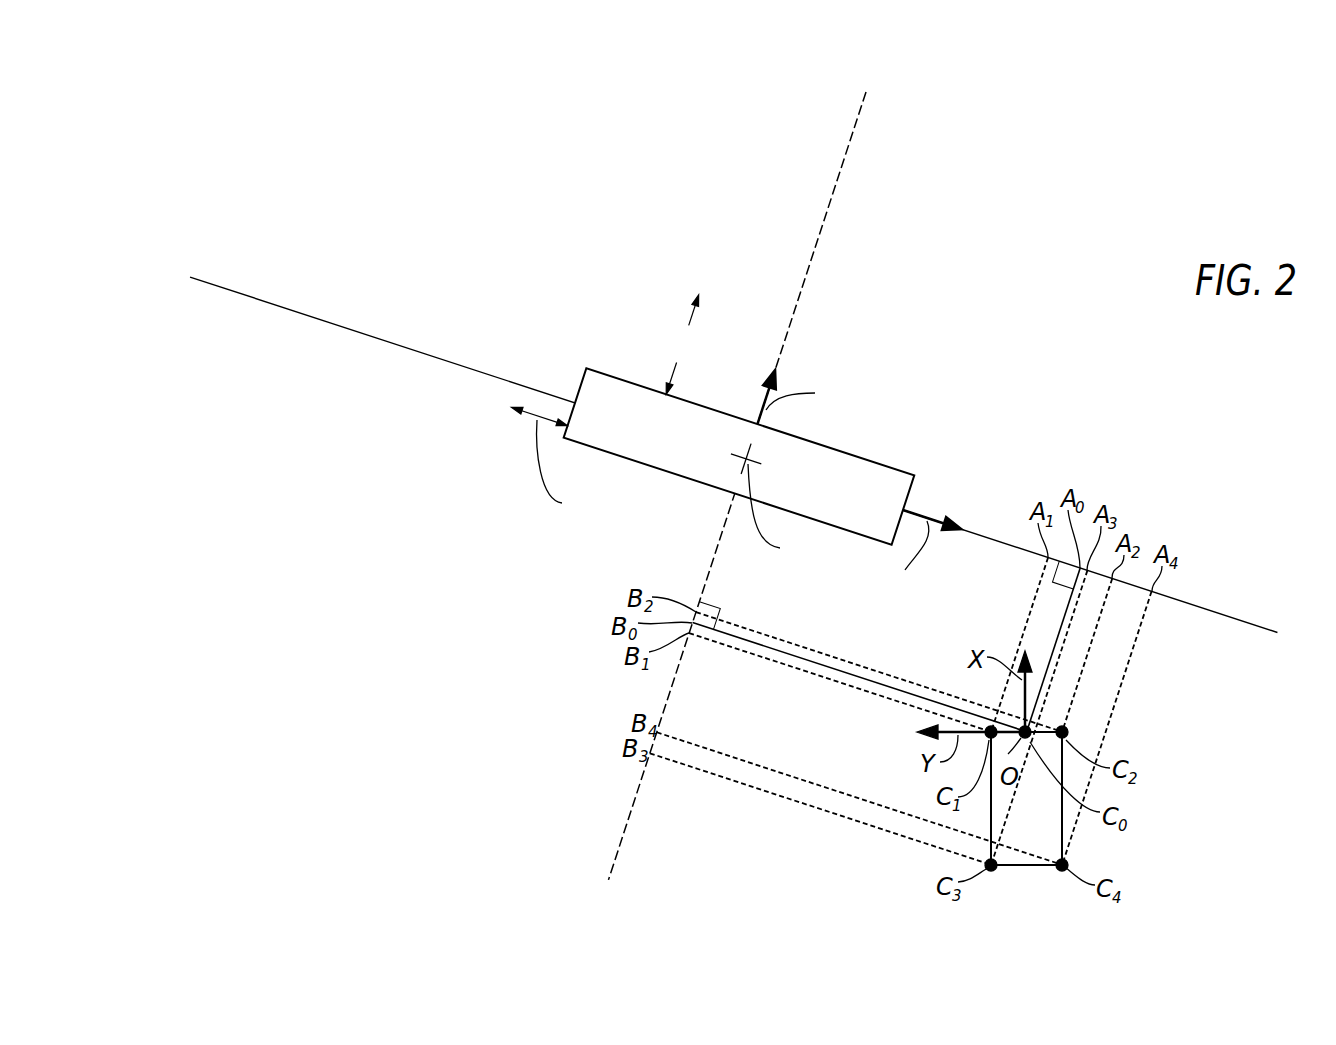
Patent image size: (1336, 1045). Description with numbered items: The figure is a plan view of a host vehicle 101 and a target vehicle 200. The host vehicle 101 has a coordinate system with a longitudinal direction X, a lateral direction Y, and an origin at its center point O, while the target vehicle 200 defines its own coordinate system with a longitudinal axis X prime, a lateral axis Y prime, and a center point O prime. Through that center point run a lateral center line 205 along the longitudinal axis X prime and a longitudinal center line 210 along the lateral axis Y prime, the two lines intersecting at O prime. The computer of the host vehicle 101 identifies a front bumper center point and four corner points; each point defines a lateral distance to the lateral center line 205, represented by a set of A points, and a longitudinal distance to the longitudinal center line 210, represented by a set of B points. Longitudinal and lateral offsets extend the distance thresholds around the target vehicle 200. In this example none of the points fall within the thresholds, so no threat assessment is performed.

The host vehicle 101 is at (1027, 866).
The target vehicle 200 is at (870, 460).
The lateral center line 205 is at (1198, 607).
The longitudinal center line 210 is at (831, 199).